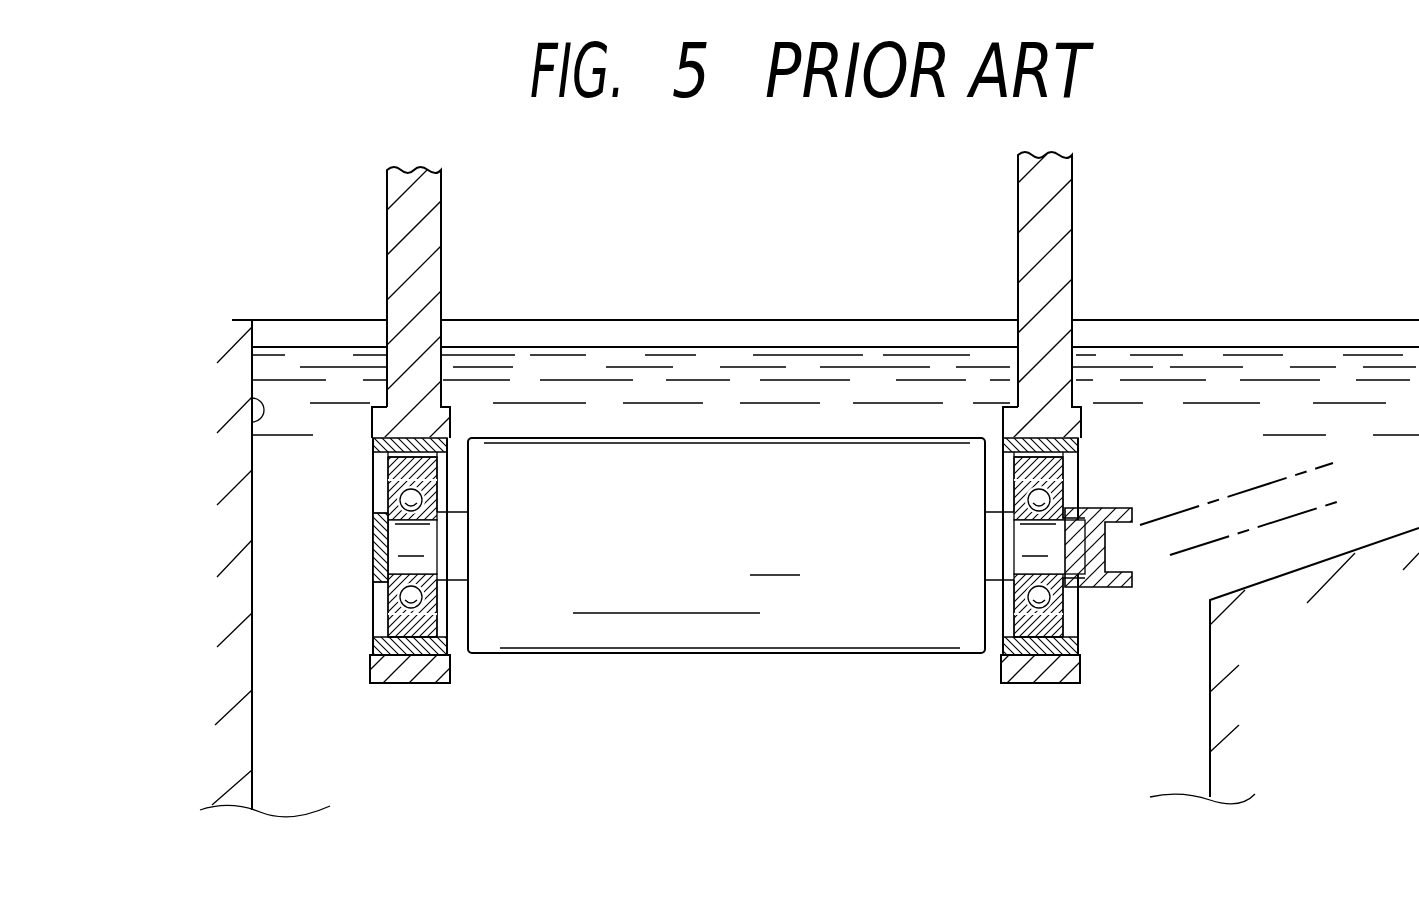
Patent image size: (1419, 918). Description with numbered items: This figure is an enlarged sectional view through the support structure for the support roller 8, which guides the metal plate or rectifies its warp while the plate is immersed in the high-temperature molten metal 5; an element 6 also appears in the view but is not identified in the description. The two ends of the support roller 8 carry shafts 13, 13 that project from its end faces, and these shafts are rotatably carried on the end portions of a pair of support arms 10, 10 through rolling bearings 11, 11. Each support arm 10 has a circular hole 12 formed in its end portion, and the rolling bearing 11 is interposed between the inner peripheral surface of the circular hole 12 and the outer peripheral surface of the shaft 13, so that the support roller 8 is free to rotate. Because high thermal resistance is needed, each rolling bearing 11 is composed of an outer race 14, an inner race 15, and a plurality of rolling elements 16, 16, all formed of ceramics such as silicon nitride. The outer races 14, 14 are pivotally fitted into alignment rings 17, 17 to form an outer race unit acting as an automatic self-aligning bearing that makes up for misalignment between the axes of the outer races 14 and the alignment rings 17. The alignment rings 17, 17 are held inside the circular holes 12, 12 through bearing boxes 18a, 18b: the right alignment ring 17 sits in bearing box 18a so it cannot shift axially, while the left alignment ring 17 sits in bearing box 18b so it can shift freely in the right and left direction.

The molten metal 5 is at (1110, 373).
The side wall 6 is at (252, 398).
The support roller 8 is at (676, 625).
The support arm 10 is at (423, 230).
The rolling bearing 11 is at (380, 598).
The circular hole 12 is at (380, 645).
The shaft 13 is at (425, 545).
The outer race 14 is at (385, 490).
The inner race 15 is at (400, 498).
The rolling element 16 is at (378, 540).
The alignment ring 17 is at (433, 683).
The bearing box 18a is at (1025, 656).
The bearing box 18b is at (380, 665).